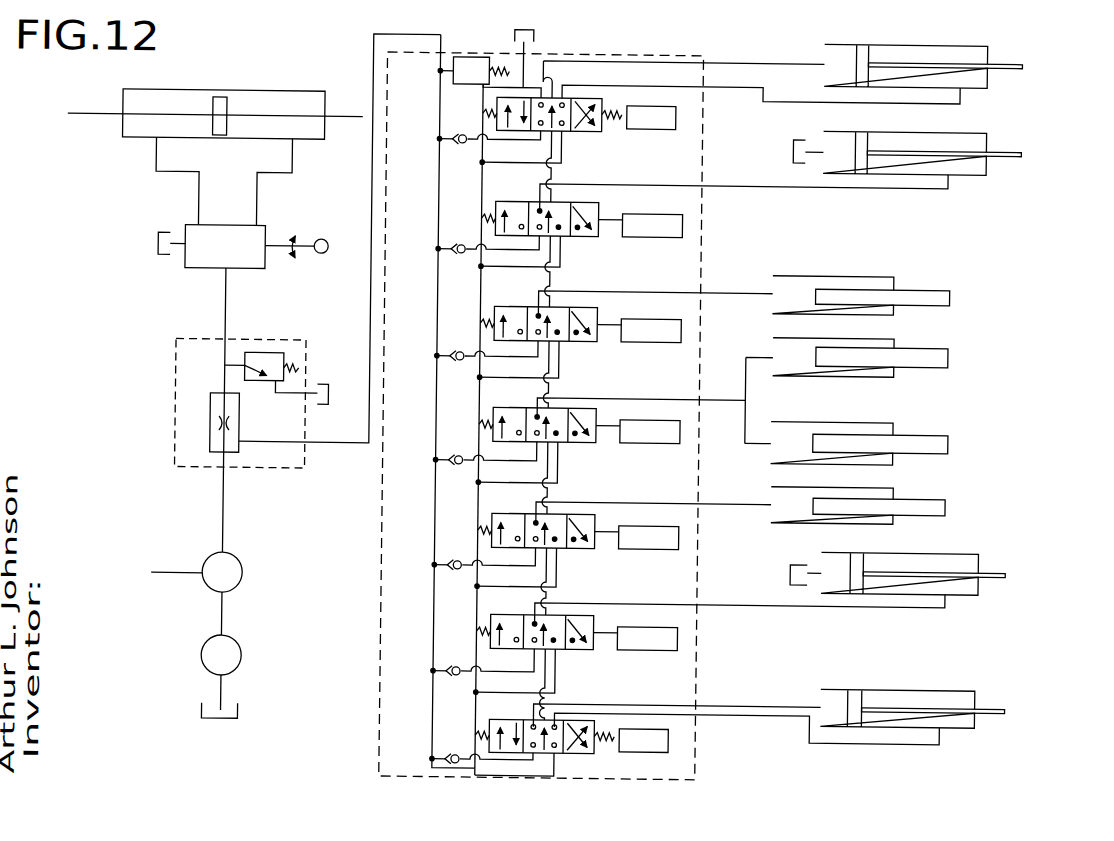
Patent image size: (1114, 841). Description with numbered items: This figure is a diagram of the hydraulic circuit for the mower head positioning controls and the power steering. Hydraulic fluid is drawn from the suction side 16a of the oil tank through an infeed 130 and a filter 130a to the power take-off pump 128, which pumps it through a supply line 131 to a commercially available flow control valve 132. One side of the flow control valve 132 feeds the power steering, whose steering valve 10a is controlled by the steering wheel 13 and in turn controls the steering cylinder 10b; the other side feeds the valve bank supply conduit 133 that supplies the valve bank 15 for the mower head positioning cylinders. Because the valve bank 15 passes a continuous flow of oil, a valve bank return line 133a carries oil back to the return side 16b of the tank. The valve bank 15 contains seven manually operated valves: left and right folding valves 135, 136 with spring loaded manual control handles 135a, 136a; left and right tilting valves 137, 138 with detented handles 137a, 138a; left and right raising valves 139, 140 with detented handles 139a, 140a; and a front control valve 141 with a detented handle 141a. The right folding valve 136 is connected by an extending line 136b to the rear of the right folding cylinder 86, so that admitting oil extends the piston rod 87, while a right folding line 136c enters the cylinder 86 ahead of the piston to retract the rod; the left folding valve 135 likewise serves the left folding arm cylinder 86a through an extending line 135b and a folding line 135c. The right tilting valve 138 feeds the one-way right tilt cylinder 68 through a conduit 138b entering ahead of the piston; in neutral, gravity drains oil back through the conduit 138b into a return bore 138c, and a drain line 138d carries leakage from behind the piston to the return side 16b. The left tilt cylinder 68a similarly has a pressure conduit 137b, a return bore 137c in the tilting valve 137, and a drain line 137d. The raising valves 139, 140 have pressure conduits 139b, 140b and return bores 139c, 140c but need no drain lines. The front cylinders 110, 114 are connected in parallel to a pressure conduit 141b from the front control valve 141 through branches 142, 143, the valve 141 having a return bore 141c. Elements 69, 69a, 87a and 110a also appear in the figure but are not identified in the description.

The steering valve 10a is at (233, 214).
The steering cylinder 10b is at (210, 81).
The steering wheel 13 is at (325, 243).
The valve bank 15 is at (632, 53).
The suction side of oil tank 16a is at (245, 722).
The return side of oil tank 16b is at (158, 242).
The power take-off pump 128 is at (248, 575).
The infeed 130 is at (229, 697).
The filter 130a is at (248, 659).
The supply line 131 is at (228, 521).
The flow control valve 132 is at (298, 325).
The valve bank supply conduit 133 is at (372, 448).
The valve bank return line 133a is at (517, 43).
The left folding valve 135 is at (590, 132).
The manual control handle 135a is at (658, 128).
The extending line 135b is at (737, 46).
The folding line 135c is at (742, 87).
The right folding valve 136 is at (590, 753).
The manual control handle 136a is at (655, 752).
The extending line 136b is at (760, 692).
The right folding line 136c is at (784, 715).
The left tilting valve 137 is at (590, 236).
The manual control handle 137a is at (663, 236).
The hydraulic pressure conduit 137b is at (663, 184).
The return bore 137c is at (562, 259).
The drain line 137d is at (817, 125).
The right tilting valve 138 is at (590, 650).
The manual control handle 138a is at (655, 649).
The conduit 138b is at (657, 594).
The return bore 138c is at (562, 678).
The drain line 138d is at (816, 547).
The left raising valve 139 is at (589, 341).
The manual control handle 139a is at (658, 318).
The pressure conduit 139b is at (747, 280).
The return bore 139c is at (562, 372).
The right raising valve 140 is at (590, 548).
The manual control handle 140a is at (655, 548).
The pressure conduit 140b is at (748, 492).
The return bore 140c is at (562, 581).
The front control valve 141 is at (590, 442).
The manual control handle 141a is at (663, 442).
The pressure conduit 141b is at (724, 386).
The return bore 141c is at (562, 477).
The branch 142 is at (749, 425).
The branch 143 is at (762, 354).
The right tilt cylinder 68 is at (905, 549).
The left tilt cylinder 68a is at (960, 128).
The piston rod 69 is at (1011, 569).
The piston rod 69a is at (1022, 148).
The right folding cylinder 86 is at (848, 686).
The left folding arm cylinder 86a is at (824, 45).
The piston rod 87 is at (1012, 704).
The piston rod 87a is at (1022, 61).
The front cylinder 110 is at (879, 419).
The piston rod 110a is at (952, 431).
The front cylinder 114 is at (898, 336).